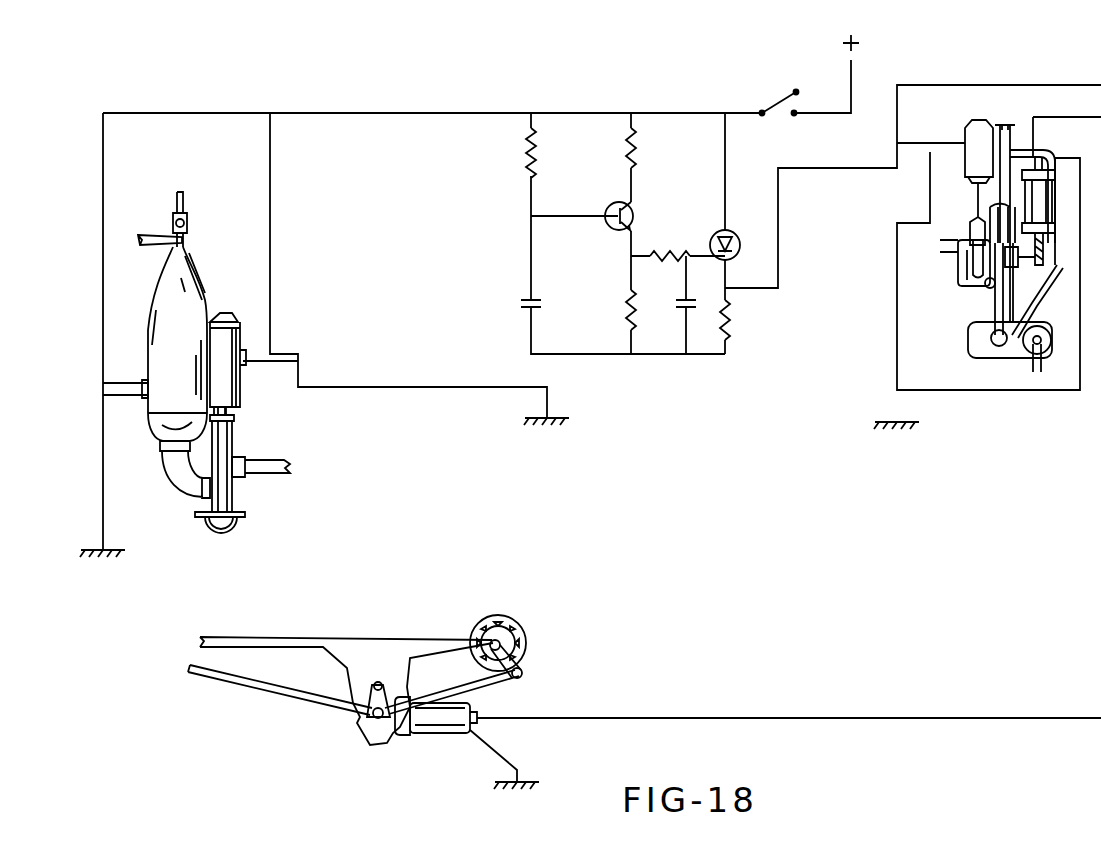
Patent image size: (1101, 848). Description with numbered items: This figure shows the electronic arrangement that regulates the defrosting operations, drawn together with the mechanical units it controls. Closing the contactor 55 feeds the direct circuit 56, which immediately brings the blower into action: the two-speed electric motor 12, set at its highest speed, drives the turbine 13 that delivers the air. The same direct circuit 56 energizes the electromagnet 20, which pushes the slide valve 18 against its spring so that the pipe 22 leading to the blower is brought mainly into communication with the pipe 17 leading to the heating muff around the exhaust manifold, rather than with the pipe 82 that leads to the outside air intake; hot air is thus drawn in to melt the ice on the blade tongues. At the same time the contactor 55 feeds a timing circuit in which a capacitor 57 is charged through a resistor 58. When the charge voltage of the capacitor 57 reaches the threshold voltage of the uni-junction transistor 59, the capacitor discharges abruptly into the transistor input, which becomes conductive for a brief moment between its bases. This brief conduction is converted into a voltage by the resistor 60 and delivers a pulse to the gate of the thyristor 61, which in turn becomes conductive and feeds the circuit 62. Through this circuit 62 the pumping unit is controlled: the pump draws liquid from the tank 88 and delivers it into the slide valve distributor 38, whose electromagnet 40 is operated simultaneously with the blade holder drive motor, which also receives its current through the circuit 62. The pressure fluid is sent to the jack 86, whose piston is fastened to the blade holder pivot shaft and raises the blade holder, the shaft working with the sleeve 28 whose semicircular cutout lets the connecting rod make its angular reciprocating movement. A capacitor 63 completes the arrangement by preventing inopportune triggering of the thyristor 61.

The two-speed electric motor 12 is at (165, 333).
The turbine 13 is at (160, 420).
The pipe 17 is at (262, 478).
The slide valve 18 is at (227, 448).
The electromagnet 20 is at (236, 332).
The pipe 22 is at (183, 483).
The sleeve 28 is at (506, 620).
The slide valve distributor 38 is at (973, 245).
The electromagnet 40 is at (963, 148).
The contactor 55 is at (793, 90).
The direct circuit 56 is at (705, 113).
The capacitor 57 is at (524, 300).
The resistor 58 is at (528, 150).
The uni-junction transistor 59 is at (616, 202).
The resistor 60 is at (628, 312).
The thyristor 61 is at (715, 232).
The circuit 62 is at (780, 270).
The capacitor 63 is at (685, 308).
The pipe 82 is at (233, 497).
The jack 86 is at (460, 712).
The tank 88 is at (975, 338).